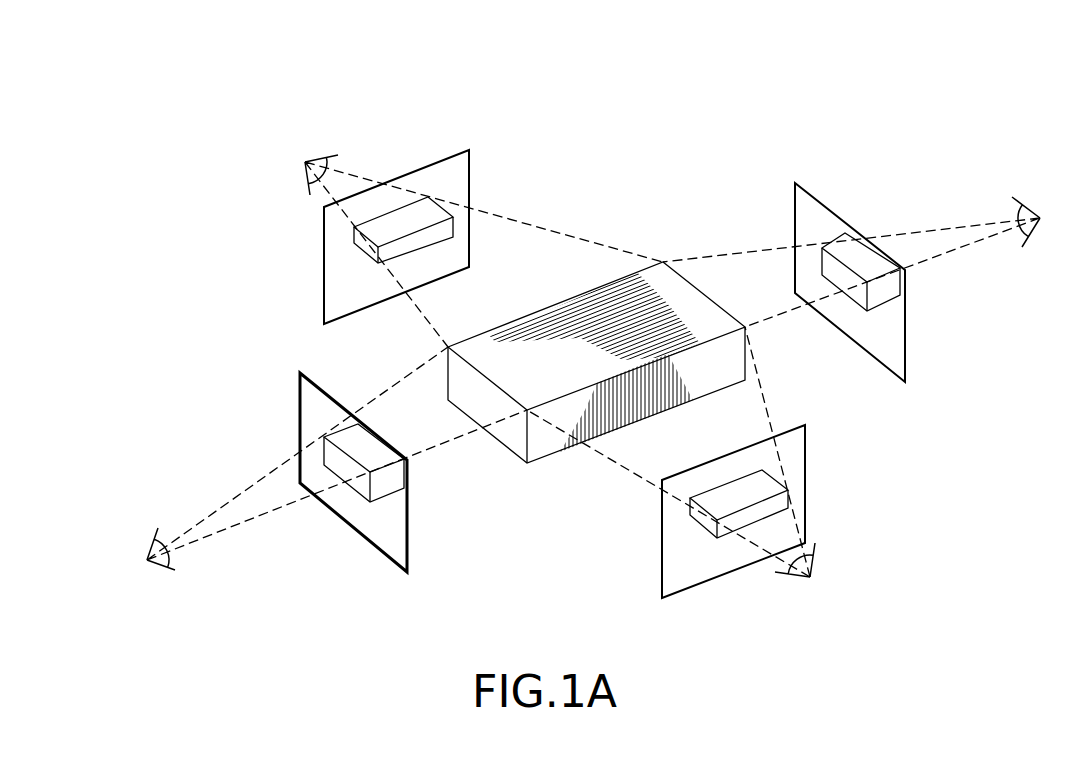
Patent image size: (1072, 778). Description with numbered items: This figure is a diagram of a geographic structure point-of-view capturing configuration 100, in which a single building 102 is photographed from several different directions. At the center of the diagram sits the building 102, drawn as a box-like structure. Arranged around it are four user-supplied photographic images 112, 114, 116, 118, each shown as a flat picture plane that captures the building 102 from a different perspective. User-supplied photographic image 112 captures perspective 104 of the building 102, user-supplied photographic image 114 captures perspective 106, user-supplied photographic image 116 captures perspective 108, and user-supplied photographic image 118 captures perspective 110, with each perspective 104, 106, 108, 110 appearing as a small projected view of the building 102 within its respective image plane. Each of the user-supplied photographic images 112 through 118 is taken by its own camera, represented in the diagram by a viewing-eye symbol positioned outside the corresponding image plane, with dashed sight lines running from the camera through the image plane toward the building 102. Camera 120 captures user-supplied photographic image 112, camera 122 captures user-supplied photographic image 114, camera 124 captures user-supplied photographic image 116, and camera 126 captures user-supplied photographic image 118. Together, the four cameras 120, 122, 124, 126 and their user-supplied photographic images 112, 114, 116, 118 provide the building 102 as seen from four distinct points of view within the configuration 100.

The geographic structure point-of-view capturing configuration 100 is at (873, 59).
The building 102 is at (577, 296).
The perspective 104 is at (725, 484).
The perspective 106 is at (323, 450).
The perspective 108 is at (383, 213).
The perspective 110 is at (818, 258).
The user-supplied photographic image 112 is at (808, 455).
The user-supplied photographic image 114 is at (298, 390).
The user-supplied photographic image 116 is at (472, 168).
The user-supplied photographic image 118 is at (806, 191).
The camera 120 is at (814, 556).
The camera 122 is at (170, 572).
The camera 124 is at (305, 162).
The camera 126 is at (1027, 208).